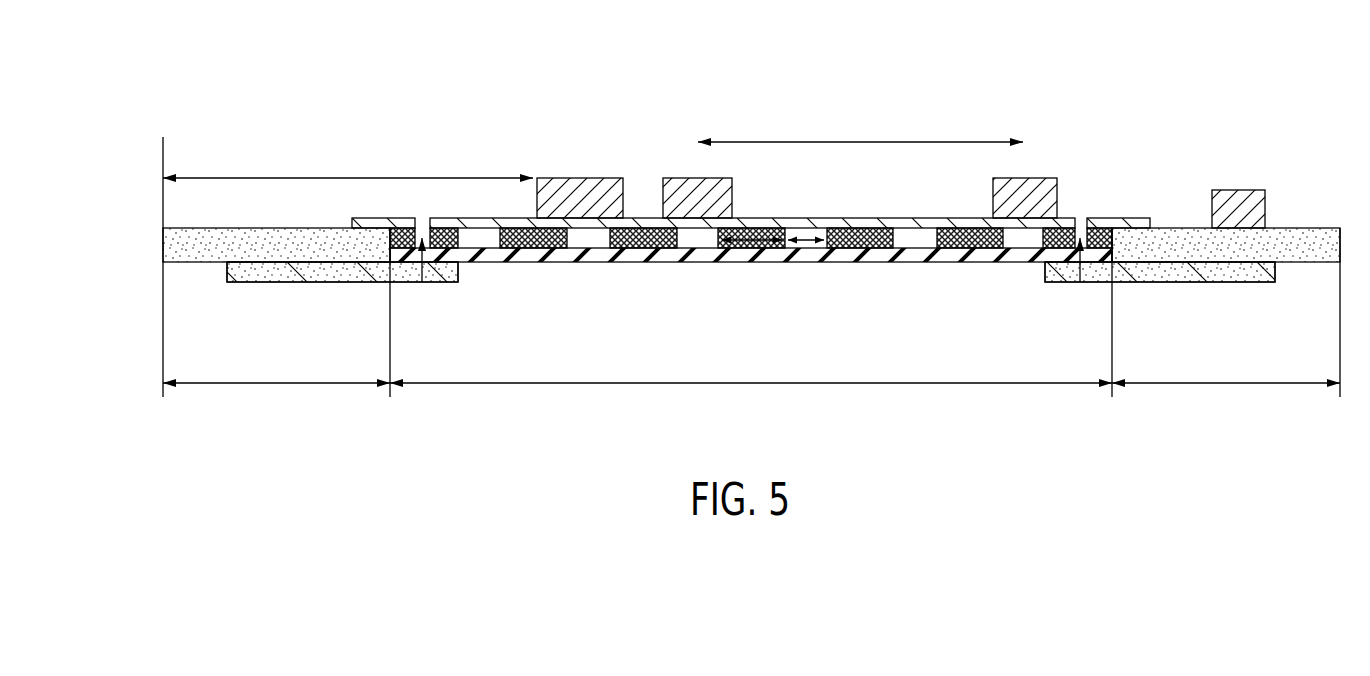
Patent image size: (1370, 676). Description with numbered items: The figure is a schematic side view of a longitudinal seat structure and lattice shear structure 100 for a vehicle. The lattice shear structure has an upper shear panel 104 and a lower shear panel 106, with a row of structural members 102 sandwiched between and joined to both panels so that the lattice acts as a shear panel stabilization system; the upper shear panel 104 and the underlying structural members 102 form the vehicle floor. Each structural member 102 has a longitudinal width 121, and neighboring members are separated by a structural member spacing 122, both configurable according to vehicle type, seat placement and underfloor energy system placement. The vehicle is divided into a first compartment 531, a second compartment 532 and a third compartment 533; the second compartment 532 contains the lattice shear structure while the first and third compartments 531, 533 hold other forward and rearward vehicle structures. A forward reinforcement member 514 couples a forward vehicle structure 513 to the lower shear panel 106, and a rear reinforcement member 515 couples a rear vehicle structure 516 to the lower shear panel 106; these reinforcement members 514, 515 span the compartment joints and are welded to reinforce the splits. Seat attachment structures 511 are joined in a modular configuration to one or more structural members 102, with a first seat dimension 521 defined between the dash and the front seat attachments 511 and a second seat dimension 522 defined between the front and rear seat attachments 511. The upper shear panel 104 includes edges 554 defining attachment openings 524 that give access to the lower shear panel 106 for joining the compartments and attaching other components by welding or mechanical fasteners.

The electronic device 100 is at (295, 110).
The structural members 102 is at (650, 243).
The upper shear panel 104 is at (1132, 220).
The lower shear panel 106 is at (1007, 263).
The longitudinal width 121 is at (757, 243).
The structural member spacing 122 is at (803, 243).
The seat attachment structures 511 is at (683, 177).
The forward vehicle structure 513 is at (183, 260).
The forward reinforcement member 514 is at (268, 270).
The rear reinforcement member 515 is at (1173, 272).
The rear vehicle structure 516 is at (1277, 253).
The first seat dimension 521 is at (345, 175).
The second seat dimension 522 is at (872, 140).
The attachment openings 524 is at (423, 262).
The first compartment 531 is at (283, 385).
The second compartment 532 is at (768, 385).
The third compartment 533 is at (1236, 385).
The edges 554 is at (410, 218).